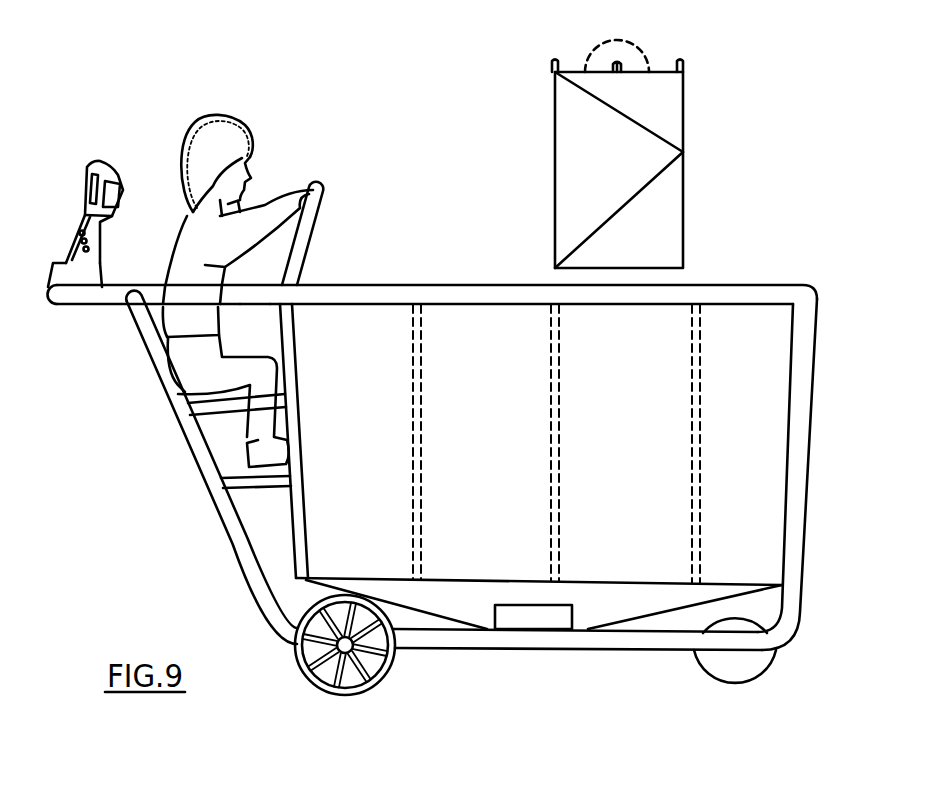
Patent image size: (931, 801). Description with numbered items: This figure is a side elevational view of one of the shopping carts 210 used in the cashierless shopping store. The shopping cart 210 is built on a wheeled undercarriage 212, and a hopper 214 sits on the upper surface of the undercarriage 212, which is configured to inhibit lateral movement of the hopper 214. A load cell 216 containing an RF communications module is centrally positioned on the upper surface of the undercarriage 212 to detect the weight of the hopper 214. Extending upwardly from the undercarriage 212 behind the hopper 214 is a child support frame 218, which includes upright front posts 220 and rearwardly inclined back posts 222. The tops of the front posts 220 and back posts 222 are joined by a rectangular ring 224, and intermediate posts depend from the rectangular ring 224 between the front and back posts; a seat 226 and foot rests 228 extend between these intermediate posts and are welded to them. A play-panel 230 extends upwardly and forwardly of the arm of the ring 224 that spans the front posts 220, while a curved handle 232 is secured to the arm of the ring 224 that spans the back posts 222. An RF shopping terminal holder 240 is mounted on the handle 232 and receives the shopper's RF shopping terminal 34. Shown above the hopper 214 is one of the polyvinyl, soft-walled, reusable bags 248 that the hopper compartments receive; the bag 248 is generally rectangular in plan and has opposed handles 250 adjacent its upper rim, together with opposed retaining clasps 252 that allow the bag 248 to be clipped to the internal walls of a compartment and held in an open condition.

The RF shopping terminal 34 is at (110, 167).
The shopping cart 210 is at (762, 215).
The wheeled undercarriage 212 is at (427, 651).
The hopper 214 is at (812, 500).
The load cell 216 is at (540, 620).
The child support frame 218 is at (210, 537).
The upright front posts 220 is at (299, 436).
The rearwardly inclined back posts 222 is at (200, 466).
The rectangular ring 224 is at (255, 303).
The seat 226 is at (205, 416).
The foot rests 228 is at (264, 489).
The play-panel 230 is at (313, 222).
The curved handle 232 is at (72, 305).
The RF shopping terminal holder 240 is at (106, 260).
The reusable bag 248 is at (652, 101).
The handles 250 is at (552, 63).
The retaining clasps 252 is at (613, 60).